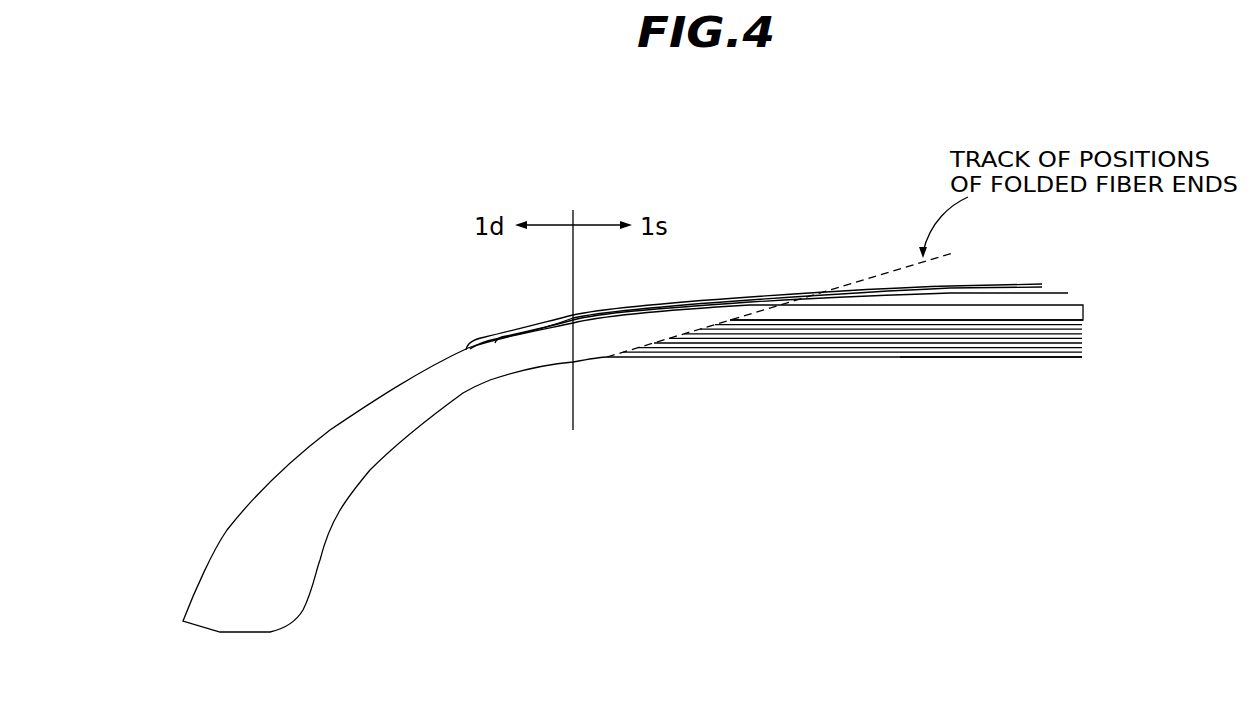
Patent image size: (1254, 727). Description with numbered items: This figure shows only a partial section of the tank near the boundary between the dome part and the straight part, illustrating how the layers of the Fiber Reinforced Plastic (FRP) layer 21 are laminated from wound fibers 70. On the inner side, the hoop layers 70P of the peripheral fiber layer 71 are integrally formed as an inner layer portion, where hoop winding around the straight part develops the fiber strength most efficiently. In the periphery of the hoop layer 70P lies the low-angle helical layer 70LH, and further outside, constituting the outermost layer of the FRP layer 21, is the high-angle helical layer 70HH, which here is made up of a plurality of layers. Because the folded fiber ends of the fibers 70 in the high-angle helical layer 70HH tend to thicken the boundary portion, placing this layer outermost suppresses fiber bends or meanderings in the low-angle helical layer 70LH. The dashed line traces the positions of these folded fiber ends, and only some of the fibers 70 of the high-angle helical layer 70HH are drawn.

The Fiber Reinforced Plastic (FRP) layer 21 is at (848, 340).
The fibers 70 is at (824, 340).
The high-angle helical layer 70HH is at (1088, 281).
The low-angle helical layer 70LH is at (1112, 303).
The hoop layer 70P is at (1093, 323).
The peripheral fiber layer 71 is at (962, 378).